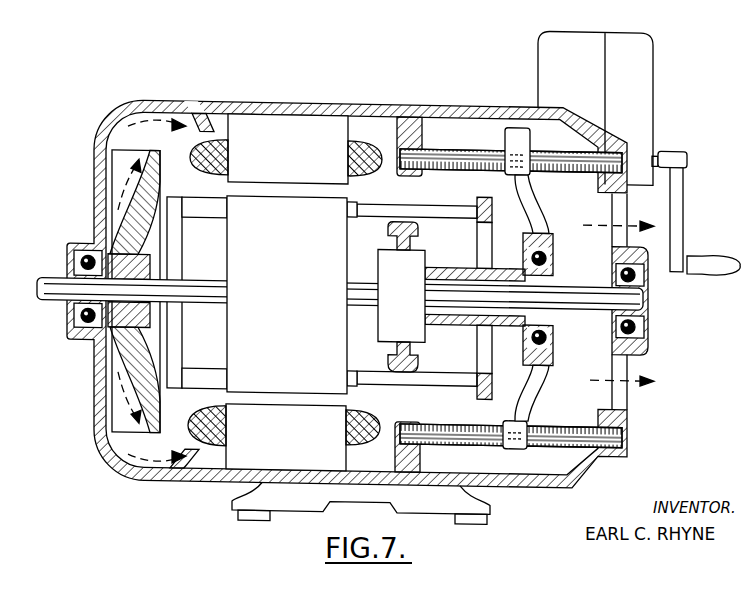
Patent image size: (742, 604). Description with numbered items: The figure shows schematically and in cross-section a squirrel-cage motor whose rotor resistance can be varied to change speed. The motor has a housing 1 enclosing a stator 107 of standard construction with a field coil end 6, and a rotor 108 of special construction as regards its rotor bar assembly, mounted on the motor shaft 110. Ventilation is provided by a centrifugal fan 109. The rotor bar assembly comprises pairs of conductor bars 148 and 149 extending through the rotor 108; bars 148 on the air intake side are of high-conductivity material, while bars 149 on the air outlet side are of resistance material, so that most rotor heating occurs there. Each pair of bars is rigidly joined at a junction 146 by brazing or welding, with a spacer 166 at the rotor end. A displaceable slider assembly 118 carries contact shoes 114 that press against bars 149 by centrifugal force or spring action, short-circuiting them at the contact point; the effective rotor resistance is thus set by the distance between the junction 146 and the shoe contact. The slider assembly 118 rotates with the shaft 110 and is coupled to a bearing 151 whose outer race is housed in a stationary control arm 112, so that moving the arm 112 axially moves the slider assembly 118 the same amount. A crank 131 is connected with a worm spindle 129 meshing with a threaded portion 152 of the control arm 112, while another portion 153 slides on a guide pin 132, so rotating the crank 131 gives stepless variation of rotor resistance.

The motor housing 1 is at (234, 104).
The field coil end 6 is at (357, 148).
The stator 107 is at (309, 162).
The rotor 108 is at (309, 302).
The centrifugal fan 109 is at (160, 402).
The motor shaft 110 is at (58, 303).
The control arm 112 is at (541, 207).
The contact shoe 114 is at (414, 244).
The slider assembly 118 is at (385, 331).
The worm spindle 129 is at (464, 148).
The crank 131 is at (683, 203).
The guide pin 132 is at (557, 424).
The junction 146 is at (352, 386).
The conductor bar 148 is at (207, 207).
The rotor bar 149 is at (447, 206).
The bearing 151 is at (557, 264).
The threaded portion 152 is at (530, 138).
The portion of control arm 153 is at (504, 447).
The rotor end spacer 166 is at (355, 204).